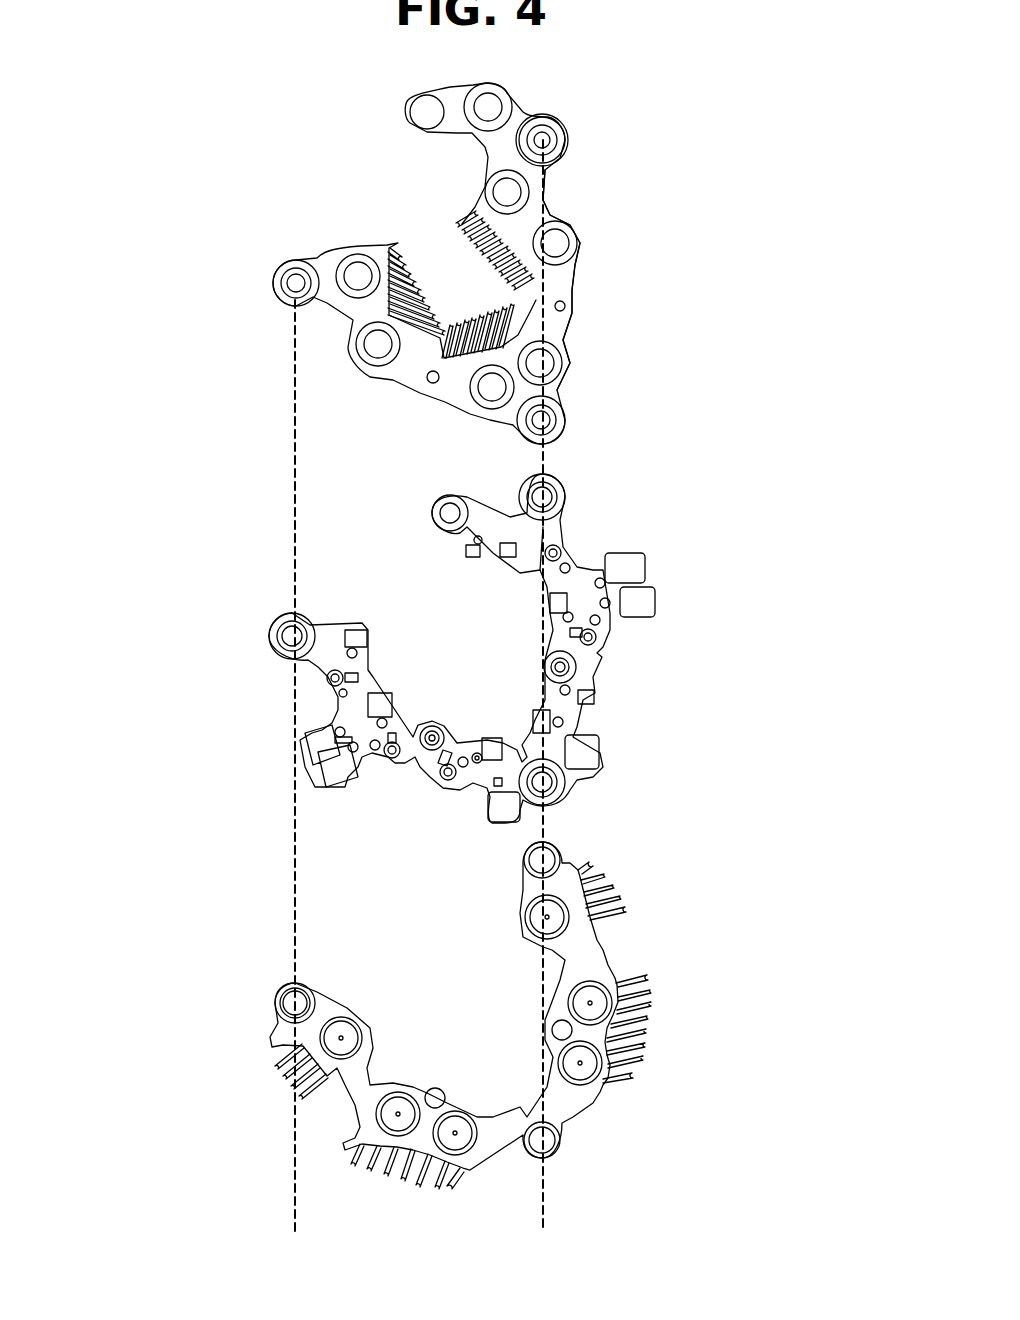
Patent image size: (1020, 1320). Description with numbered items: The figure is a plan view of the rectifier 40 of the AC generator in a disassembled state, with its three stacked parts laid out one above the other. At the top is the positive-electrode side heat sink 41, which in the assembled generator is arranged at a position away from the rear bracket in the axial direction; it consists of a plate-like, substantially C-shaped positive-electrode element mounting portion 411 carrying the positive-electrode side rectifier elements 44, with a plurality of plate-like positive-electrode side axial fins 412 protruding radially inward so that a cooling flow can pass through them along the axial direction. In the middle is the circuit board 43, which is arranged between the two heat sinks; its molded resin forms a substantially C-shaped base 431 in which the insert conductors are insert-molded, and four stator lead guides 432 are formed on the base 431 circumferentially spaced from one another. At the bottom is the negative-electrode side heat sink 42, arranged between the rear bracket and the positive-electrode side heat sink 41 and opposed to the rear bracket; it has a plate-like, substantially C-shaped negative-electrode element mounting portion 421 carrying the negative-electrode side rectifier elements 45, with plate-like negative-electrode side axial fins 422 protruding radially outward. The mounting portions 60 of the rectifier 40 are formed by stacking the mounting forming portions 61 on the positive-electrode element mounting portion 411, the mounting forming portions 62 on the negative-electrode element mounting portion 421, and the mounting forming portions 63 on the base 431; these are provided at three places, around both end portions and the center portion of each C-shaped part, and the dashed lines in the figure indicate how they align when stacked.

The rectifier 40 is at (187, 298).
The positive-electrode side heat sink 41 is at (590, 145).
The positive-electrode element mounting portion 411 is at (560, 290).
The positive-electrode side axial fins 412 is at (413, 290).
The negative-electrode side heat sink 42 is at (653, 912).
The negative-electrode element mounting portion 421 is at (590, 963).
The negative-electrode side axial fins 422 is at (647, 1052).
The circuit board 43 is at (623, 503).
The base 431 is at (583, 660).
The stator lead guides 432 is at (640, 615).
The positive-electrode side rectifier elements 44 is at (560, 243).
The negative-electrode side rectifier elements 45 is at (583, 1073).
The mounting portions 60 is at (565, 158).
The mounting forming portions 61 is at (567, 410).
The mounting forming portions 62 is at (290, 1003).
The mounting forming portions 63 is at (560, 790).